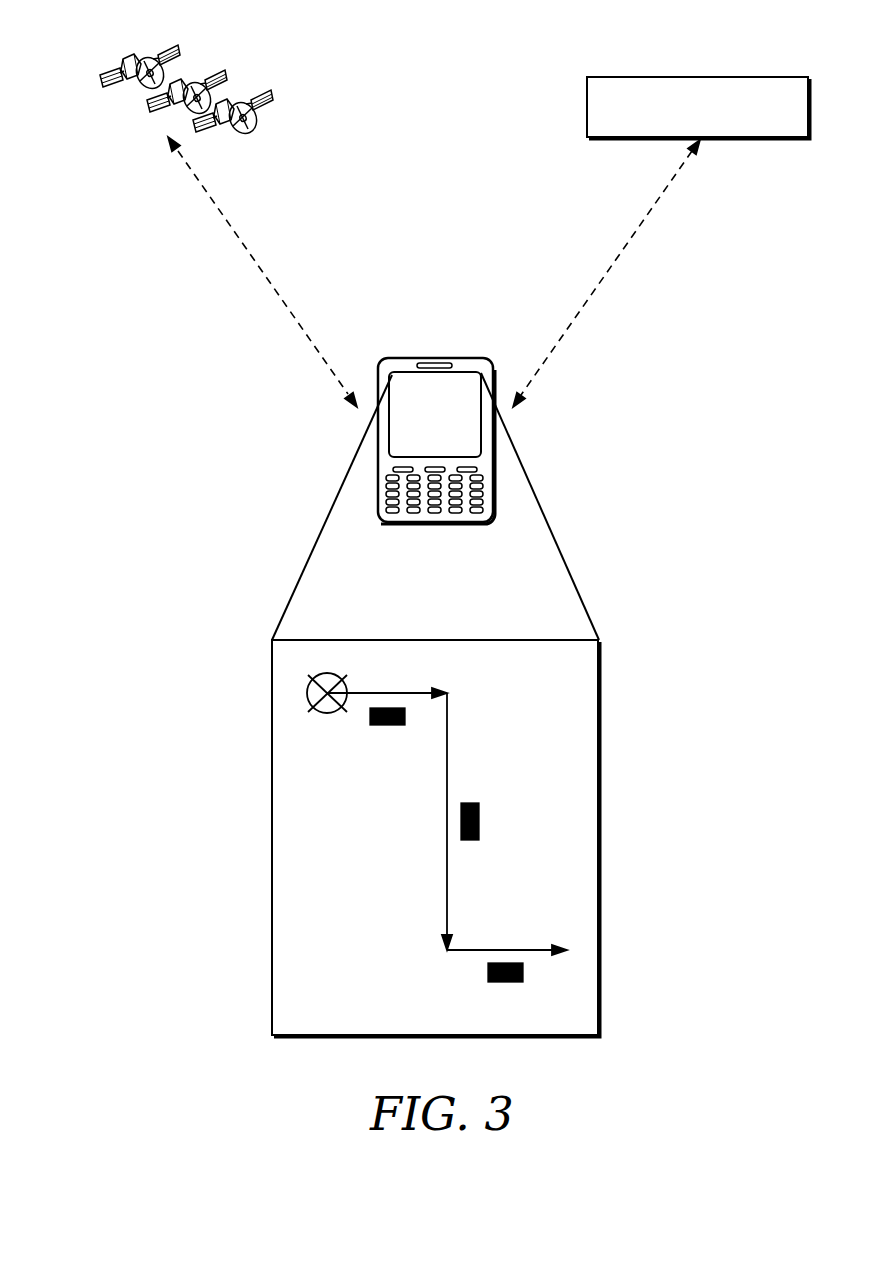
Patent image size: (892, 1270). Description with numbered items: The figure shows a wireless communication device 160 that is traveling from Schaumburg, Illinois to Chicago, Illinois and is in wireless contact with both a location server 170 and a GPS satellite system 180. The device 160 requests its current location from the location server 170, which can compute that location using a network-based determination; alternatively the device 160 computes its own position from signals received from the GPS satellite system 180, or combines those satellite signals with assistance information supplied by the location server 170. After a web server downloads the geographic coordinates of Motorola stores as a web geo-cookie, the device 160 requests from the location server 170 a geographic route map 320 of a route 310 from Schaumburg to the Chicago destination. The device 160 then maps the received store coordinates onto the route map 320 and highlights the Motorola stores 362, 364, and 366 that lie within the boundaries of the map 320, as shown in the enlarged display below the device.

The GPS satellite system 180 is at (100, 80).
The location server 170 is at (600, 77).
The wireless communication device 160 is at (467, 359).
The geographic route map 320 is at (436, 639).
The route 310 is at (448, 730).
The Motorola store 362 is at (387, 727).
The Motorola store 364 is at (480, 821).
The Motorola store 366 is at (488, 972).